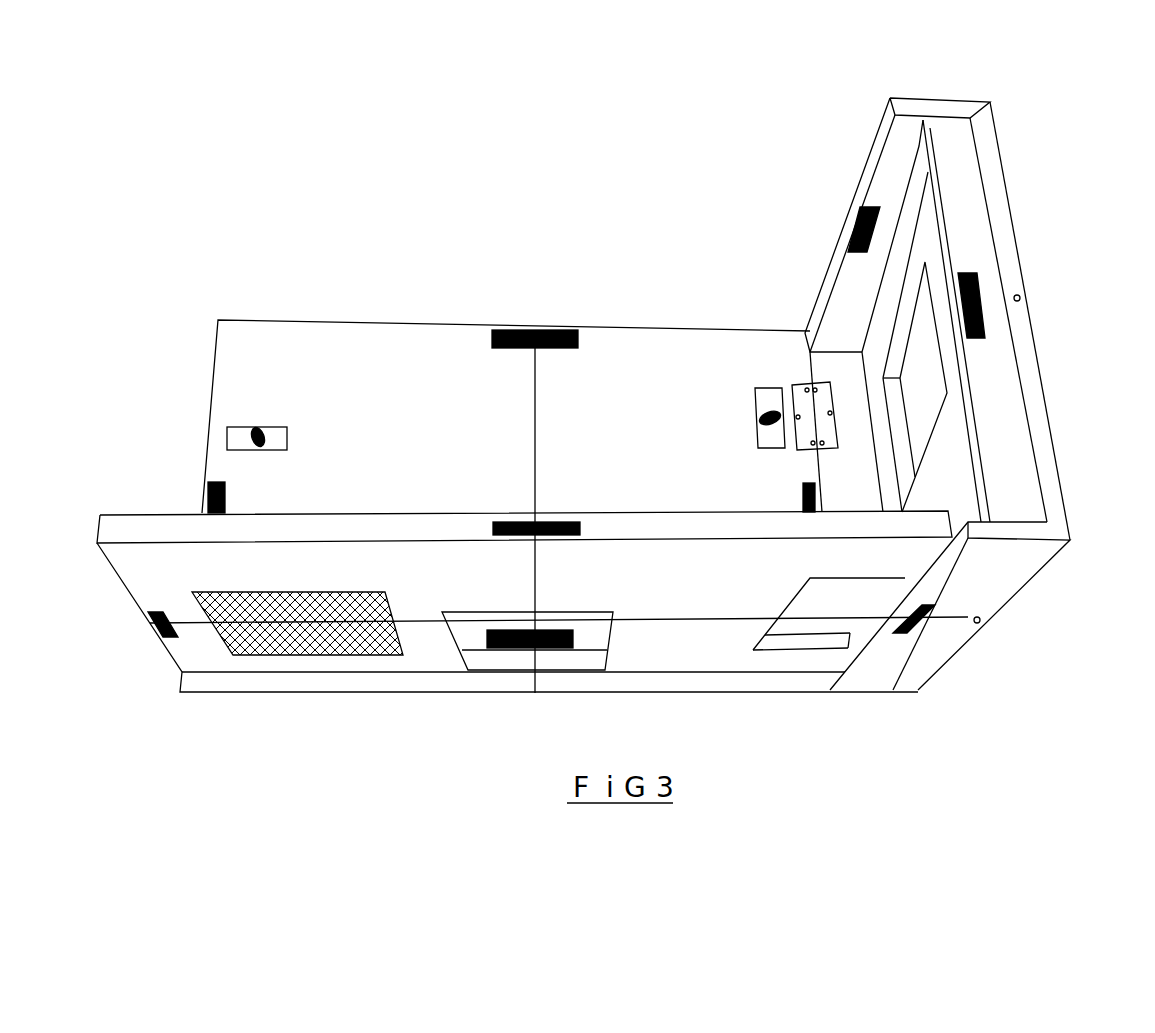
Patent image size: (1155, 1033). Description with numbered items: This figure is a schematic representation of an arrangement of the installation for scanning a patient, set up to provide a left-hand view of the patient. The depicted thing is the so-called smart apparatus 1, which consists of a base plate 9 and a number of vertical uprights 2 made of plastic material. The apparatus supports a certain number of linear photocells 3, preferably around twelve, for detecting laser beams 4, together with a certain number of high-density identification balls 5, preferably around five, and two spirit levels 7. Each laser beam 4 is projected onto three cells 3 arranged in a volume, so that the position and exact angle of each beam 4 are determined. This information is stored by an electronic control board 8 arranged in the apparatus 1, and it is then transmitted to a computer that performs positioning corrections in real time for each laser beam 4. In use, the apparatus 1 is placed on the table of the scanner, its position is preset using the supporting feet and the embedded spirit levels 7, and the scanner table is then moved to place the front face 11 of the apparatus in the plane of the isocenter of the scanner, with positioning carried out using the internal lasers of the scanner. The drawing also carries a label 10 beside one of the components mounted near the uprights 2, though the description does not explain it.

The apparatus 1 is at (524, 418).
The vertical upright 2 is at (155, 577).
The linear photocell 3 is at (535, 330).
The laser beam 4 is at (535, 376).
The identification ball 5 is at (1020, 300).
The spirit level 7 is at (260, 428).
The electronic control board 8 is at (290, 605).
The base plate 9 is at (323, 383).
The control module 10 is at (805, 403).
The front face 11 is at (1040, 425).